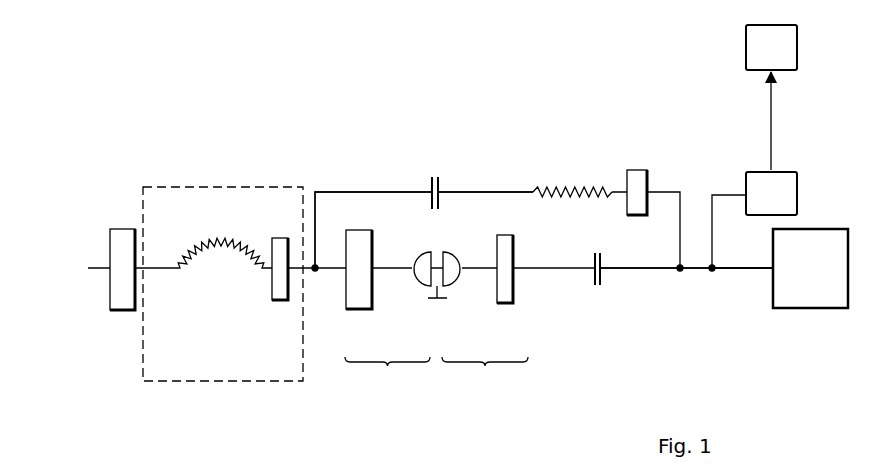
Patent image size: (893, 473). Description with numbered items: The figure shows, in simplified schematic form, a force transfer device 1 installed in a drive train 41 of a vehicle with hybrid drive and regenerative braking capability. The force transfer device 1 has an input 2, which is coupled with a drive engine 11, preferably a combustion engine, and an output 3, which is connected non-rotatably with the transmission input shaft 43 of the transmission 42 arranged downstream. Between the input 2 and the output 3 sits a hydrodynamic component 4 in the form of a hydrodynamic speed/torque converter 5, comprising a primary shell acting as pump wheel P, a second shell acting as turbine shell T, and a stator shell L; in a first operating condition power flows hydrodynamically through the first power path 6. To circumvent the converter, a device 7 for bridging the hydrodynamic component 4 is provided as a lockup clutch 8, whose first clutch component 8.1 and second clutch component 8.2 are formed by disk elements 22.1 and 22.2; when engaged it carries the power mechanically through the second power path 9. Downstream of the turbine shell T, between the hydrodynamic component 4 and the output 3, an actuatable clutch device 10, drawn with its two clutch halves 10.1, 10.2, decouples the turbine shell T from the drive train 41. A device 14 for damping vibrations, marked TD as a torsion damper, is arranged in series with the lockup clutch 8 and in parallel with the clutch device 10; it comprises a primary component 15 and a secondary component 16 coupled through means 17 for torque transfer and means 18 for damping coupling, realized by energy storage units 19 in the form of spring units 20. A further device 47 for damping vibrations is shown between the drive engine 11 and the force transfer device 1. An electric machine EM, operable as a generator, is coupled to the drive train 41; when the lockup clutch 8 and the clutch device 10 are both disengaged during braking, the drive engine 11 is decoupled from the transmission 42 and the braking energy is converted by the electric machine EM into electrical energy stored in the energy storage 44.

The force transfer device 1 is at (453, 148).
The input 2 is at (163, 270).
The output 3 is at (695, 268).
The hydrodynamic component 4 is at (436, 353).
The hydrodynamic speed/torque converter 5 is at (436, 353).
The first power path 6 is at (334, 285).
The device for bridging hydrodynamic component 7 is at (453, 148).
The lockup clutch 8 is at (453, 148).
The first clutch component 8.1 is at (453, 148).
The second clutch component 8.2 is at (453, 148).
The second power path 9 is at (333, 188).
The actuatable clutch device 10 is at (602, 307).
The first clutch half of clutch 10 10.1 is at (602, 307).
The second clutch half of clutch 10 10.2 is at (592, 275).
The drive engine 11 is at (119, 297).
The device for damping vibrations 14 is at (567, 163).
The primary component 15 is at (495, 192).
The secondary component 16 is at (640, 180).
The means for torque transfer 17 is at (609, 185).
The means for damping coupling 18 is at (555, 188).
The energy storage units 19 is at (609, 185).
The spring units 20 is at (609, 185).
The disk element 22.1 is at (453, 148).
The disk element 22.2 is at (437, 147).
The drive train 41 is at (362, 112).
The transmission 42 is at (810, 268).
The transmission input shaft 43 is at (760, 268).
The energy storage 44 is at (790, 97).
The device for damping vibrations 47 is at (223, 366).
The torsional damper TD is at (567, 163).
The electric machine EM is at (754, 220).
The pump wheel P is at (387, 375).
The turbine shell T is at (485, 314).
The stator shell L is at (447, 297).